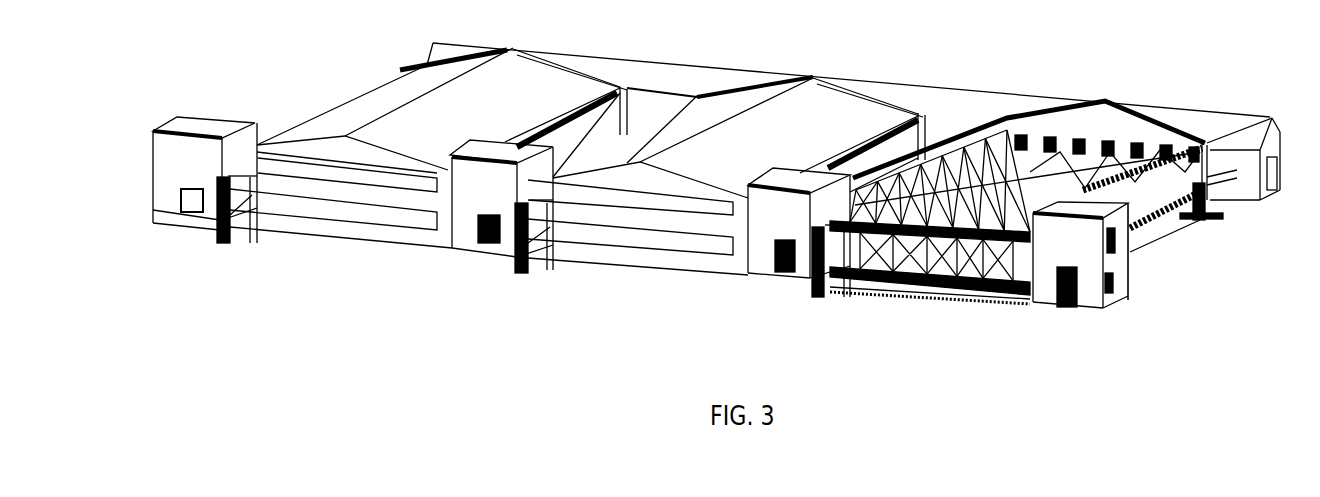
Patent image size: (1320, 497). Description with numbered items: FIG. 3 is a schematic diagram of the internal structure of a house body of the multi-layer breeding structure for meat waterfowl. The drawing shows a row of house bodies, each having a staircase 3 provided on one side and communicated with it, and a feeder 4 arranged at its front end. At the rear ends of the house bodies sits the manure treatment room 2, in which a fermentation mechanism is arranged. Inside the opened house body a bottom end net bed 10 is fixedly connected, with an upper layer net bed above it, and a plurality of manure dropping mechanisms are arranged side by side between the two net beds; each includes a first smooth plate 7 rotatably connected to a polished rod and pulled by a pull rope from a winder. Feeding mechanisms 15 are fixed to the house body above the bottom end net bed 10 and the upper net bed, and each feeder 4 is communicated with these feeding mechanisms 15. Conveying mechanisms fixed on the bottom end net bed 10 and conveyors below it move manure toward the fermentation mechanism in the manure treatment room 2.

The manure treatment room 2 is at (1261, 125).
The staircase 3 is at (1110, 273).
The feeder 4 is at (788, 240).
The first smooth plate 7 is at (926, 282).
The bottom end net bed 10 is at (930, 311).
The feeding mechanism 15 is at (1043, 143).